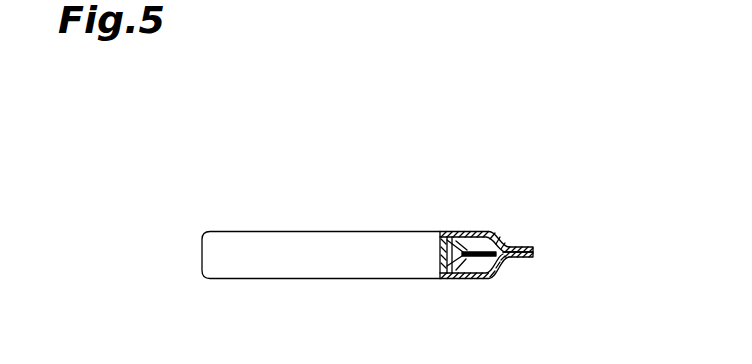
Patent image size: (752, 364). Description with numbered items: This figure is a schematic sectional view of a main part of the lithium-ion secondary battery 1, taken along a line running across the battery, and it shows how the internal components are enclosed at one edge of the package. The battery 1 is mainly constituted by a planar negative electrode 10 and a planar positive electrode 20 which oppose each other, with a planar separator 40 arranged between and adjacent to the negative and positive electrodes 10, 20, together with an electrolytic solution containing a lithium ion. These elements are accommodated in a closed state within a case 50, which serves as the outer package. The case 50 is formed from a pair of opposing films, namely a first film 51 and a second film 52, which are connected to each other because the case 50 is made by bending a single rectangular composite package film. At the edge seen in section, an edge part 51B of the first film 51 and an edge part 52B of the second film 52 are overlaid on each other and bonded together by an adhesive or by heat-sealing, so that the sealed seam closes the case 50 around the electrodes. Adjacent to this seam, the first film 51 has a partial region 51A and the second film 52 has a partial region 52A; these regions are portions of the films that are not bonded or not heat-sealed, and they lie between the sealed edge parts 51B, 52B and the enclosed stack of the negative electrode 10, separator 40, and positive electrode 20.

The lithium-ion secondary battery 1 is at (458, 166).
The negative electrode 10 is at (452, 231).
The positive electrode 20 is at (452, 262).
The separator 40 is at (459, 257).
The case 50 is at (567, 252).
The first film 51 is at (540, 214).
The partial region of the first film 51A is at (484, 232).
The edge part of the first film 51B is at (514, 247).
The second film 52 is at (540, 289).
The partial region of the second film 52A is at (485, 278).
The edge part of the second film 52B is at (513, 257).